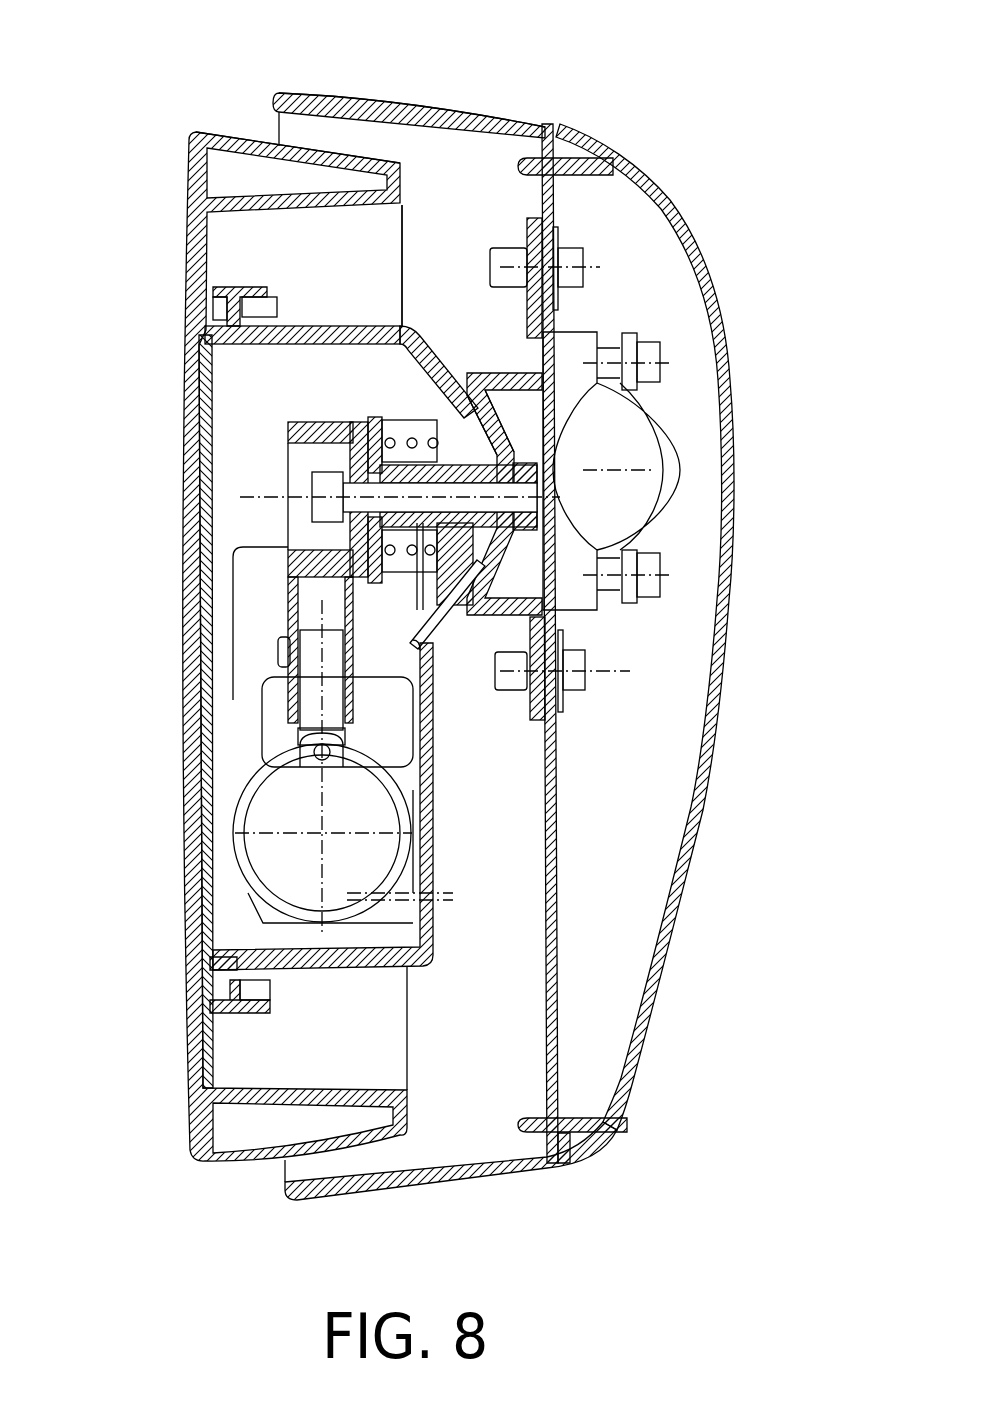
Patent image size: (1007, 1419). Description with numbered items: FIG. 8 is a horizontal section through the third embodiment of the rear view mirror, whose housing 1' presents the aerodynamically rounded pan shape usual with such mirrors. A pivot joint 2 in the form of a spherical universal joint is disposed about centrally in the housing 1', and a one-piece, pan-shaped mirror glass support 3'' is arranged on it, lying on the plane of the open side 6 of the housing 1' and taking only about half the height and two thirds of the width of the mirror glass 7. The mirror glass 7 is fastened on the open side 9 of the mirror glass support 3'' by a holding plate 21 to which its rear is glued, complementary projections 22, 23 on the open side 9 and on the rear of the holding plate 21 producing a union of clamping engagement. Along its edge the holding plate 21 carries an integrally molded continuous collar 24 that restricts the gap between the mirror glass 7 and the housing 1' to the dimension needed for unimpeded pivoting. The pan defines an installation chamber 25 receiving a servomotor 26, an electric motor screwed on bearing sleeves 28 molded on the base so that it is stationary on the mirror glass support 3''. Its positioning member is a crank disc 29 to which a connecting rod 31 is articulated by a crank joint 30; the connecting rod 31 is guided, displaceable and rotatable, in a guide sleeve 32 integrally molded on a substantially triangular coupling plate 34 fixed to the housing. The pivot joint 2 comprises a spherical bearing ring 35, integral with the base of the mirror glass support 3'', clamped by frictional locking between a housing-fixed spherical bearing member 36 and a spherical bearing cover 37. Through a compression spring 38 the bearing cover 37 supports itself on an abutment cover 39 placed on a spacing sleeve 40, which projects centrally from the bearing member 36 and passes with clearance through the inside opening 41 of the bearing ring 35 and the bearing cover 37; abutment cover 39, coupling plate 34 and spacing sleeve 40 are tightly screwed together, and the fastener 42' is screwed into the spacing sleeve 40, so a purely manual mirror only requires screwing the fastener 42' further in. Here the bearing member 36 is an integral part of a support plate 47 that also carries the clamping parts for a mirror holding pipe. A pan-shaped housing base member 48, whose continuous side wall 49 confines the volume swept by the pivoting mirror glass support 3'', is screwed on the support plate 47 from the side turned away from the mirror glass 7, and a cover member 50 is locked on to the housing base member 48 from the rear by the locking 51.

The housing 1' is at (423, 63).
The pivot joint 2 is at (469, 371).
The mirror glass support 3'' is at (432, 878).
The open side of the housing 6 is at (260, 118).
The mirror glass 7 is at (189, 237).
The open side of the mirror glass support 9 is at (228, 490).
The holding plate 21 is at (203, 432).
The complementary projection 22 is at (233, 300).
The complementary projection 23 is at (258, 308).
The continuous collar 24 is at (262, 155).
The installation chamber 25 is at (232, 370).
The servomotor 26 is at (268, 745).
The bearing sleeve 28 is at (398, 660).
The crank disc 29 is at (360, 812).
The crank joint 30 is at (318, 762).
The connecting rod 31 is at (310, 690).
The guide sleeve 32 is at (295, 607).
The coupling plate 34 is at (355, 440).
The spherical bearing ring 35 is at (442, 380).
The spherical bearing member 36 is at (510, 410).
The bearing cover 37 is at (482, 556).
The compression spring 38 is at (404, 560).
The abutment cover 39 is at (378, 420).
The spacing sleeve 40 is at (520, 517).
The inside opening of the bearing ring 41 is at (546, 440).
The fastener 42' is at (396, 480).
The support plate 47 is at (535, 637).
The housing base member 48 is at (556, 805).
The side wall 49 is at (440, 1180).
The cover member 50 is at (713, 714).
The locking 51 is at (565, 155).